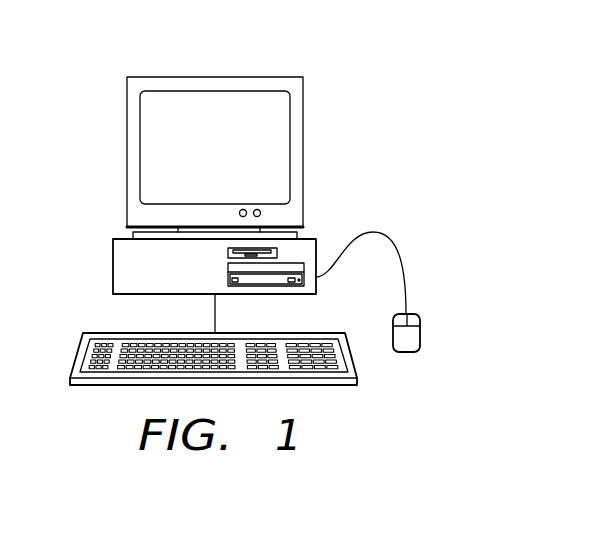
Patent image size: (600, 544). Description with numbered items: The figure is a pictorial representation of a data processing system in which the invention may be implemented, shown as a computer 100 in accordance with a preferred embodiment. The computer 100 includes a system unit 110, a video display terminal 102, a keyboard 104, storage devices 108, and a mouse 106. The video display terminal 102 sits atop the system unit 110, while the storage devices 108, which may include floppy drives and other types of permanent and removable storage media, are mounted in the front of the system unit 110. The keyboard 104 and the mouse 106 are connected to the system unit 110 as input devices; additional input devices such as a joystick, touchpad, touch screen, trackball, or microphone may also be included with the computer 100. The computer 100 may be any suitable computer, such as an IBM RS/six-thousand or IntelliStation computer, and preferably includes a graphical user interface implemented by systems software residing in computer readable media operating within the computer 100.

The computer 100 is at (380, 70).
The video display terminal 102 is at (127, 153).
The keyboard 104 is at (103, 386).
The mouse 106 is at (420, 332).
The storage devices 108 is at (228, 258).
The system unit 110 is at (219, 282).